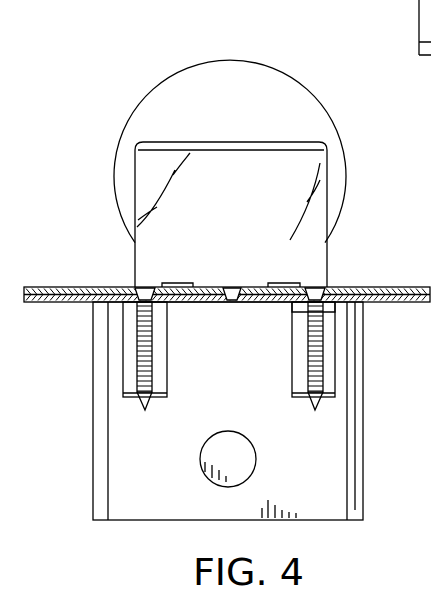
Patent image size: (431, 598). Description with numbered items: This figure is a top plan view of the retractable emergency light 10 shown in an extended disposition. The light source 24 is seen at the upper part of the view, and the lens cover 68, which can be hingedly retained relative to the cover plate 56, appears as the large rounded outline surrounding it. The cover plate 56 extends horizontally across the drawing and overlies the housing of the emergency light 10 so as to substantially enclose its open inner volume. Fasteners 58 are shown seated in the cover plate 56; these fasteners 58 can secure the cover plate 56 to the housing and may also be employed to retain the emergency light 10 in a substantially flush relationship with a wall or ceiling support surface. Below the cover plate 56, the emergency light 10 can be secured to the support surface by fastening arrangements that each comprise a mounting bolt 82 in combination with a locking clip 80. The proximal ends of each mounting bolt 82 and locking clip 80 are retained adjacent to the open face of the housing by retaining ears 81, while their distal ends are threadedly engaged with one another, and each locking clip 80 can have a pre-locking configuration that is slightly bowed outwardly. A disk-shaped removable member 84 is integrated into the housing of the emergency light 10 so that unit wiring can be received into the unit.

The emergency light 10 is at (58, 85).
The lens cover 68 is at (185, 82).
The light source 24 is at (240, 135).
The fasteners 58 is at (238, 286).
The cover plate 56 is at (400, 287).
The locking clip 80 is at (290, 348).
The retaining ears 81 is at (298, 312).
The mounting bolt 82 is at (318, 355).
The removable member 84 is at (237, 432).